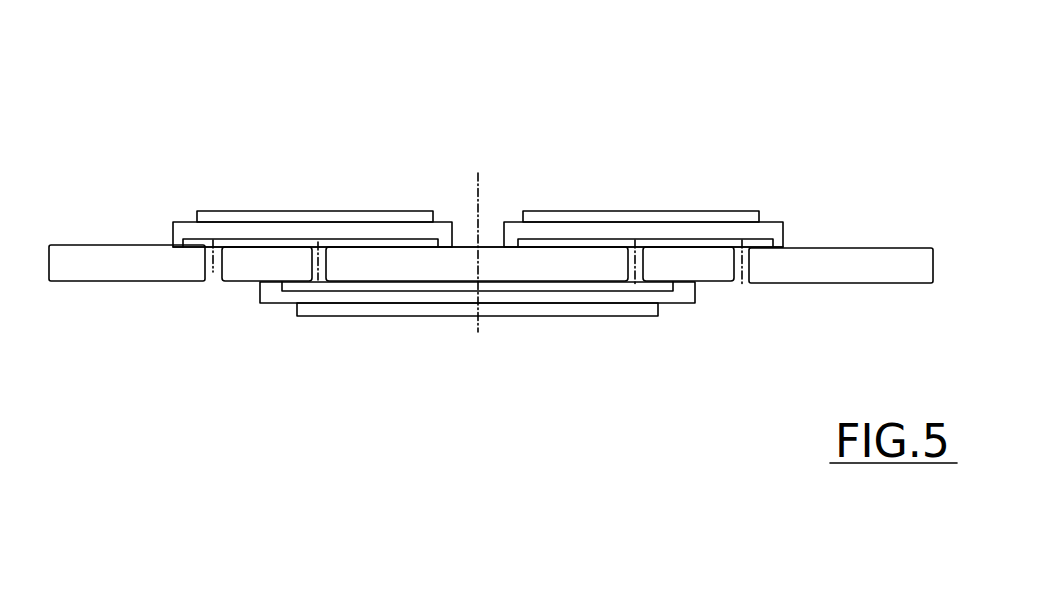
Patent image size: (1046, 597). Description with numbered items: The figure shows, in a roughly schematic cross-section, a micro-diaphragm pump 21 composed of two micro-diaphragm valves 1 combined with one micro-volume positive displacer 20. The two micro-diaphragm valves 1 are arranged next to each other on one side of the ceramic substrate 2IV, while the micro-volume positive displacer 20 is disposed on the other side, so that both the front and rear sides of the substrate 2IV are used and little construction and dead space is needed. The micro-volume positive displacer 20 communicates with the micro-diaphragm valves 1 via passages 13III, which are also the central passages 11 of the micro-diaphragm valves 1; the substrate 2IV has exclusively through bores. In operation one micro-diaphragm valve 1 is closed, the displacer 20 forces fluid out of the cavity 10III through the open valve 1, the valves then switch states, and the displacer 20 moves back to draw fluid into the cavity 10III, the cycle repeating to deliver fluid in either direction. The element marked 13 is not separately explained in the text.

The micro-diaphragm valve 1 is at (392, 177).
The substrate 2IV is at (127, 263).
The component / chip 13 is at (212, 272).
The passage 13III is at (635, 285).
The passage 11 is at (477, 386).
The cavity 10III is at (408, 287).
The micro-volume positive displacer 20 is at (460, 355).
The micro-diaphragm pump 21 is at (526, 136).